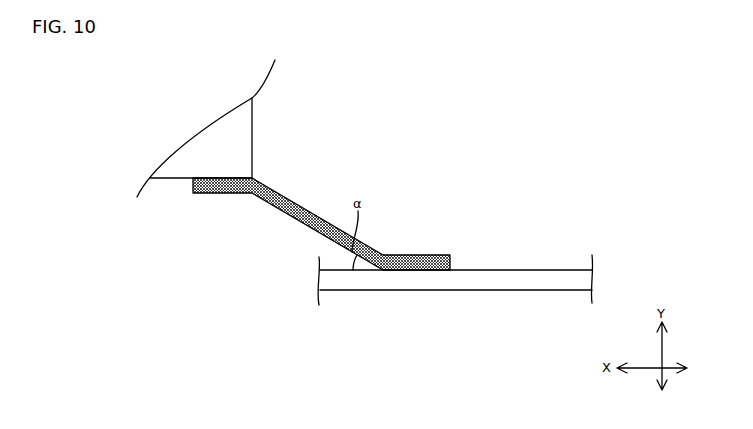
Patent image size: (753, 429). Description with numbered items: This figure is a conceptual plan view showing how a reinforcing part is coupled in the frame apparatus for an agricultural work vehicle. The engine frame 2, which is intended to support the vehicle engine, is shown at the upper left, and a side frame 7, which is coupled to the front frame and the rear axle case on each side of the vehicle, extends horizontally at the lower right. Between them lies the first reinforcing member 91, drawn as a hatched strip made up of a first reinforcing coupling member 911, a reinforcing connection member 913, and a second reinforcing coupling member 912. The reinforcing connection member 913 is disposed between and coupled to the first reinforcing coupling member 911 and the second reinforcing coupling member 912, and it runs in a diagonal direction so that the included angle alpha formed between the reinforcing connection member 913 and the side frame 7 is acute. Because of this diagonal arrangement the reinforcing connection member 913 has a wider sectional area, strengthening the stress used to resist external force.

The engine frame 2 is at (237, 152).
The first reinforcing member 91 is at (318, 285).
The first reinforcing coupling member 911 is at (222, 193).
The reinforcing connection member 913 is at (302, 222).
The second reinforcing coupling member 912 is at (416, 310).
The side frame 7 is at (513, 282).